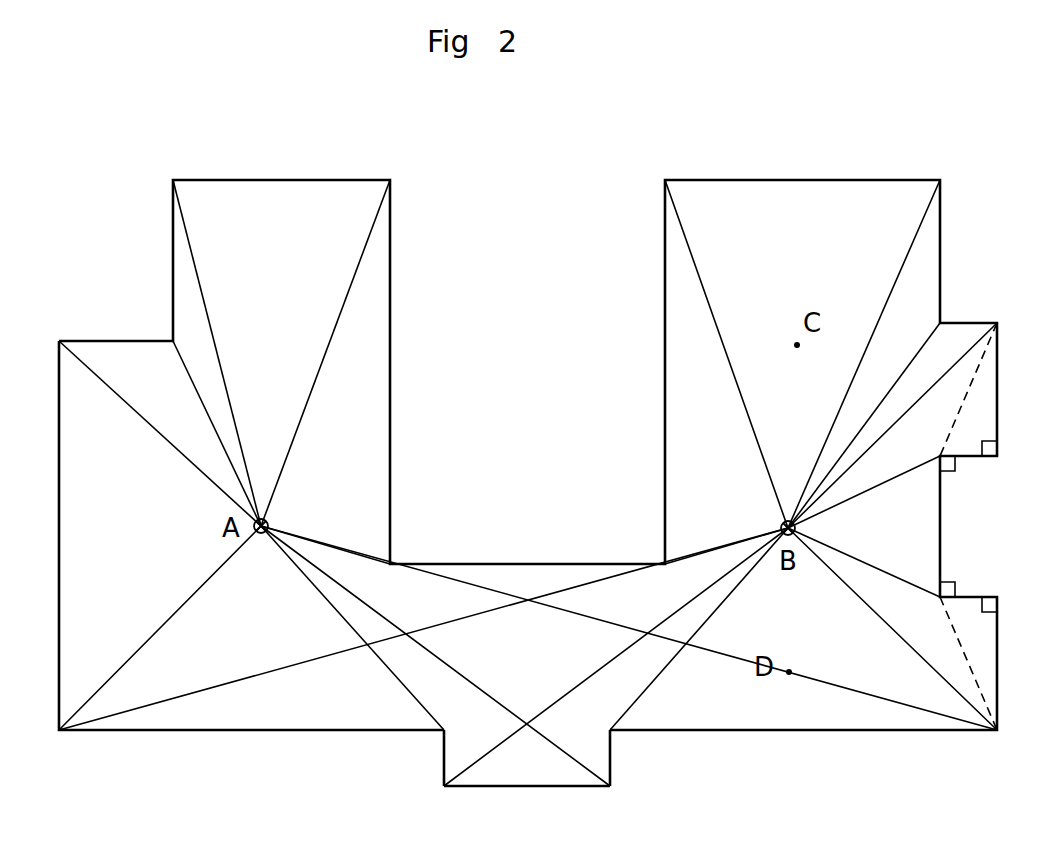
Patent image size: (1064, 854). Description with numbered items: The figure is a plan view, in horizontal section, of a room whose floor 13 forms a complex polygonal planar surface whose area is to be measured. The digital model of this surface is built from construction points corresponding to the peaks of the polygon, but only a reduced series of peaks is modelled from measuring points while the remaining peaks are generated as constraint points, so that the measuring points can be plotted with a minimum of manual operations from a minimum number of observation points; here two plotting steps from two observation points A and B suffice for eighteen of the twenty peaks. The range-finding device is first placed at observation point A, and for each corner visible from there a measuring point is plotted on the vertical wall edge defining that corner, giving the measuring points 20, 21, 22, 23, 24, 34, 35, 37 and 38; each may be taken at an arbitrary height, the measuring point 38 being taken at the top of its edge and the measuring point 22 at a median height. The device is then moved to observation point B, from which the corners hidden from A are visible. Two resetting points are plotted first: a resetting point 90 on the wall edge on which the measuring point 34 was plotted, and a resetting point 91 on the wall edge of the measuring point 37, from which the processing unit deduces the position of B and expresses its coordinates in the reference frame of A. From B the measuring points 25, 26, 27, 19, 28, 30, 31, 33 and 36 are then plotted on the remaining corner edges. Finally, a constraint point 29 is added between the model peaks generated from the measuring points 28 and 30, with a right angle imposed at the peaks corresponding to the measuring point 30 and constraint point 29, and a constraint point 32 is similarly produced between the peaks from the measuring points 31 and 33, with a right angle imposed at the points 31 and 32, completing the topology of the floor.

The floor 13 is at (246, 684).
The measuring point 19 is at (882, 409).
The measuring point 20 is at (144, 414).
The measuring point 21 is at (191, 414).
The measuring point 22 is at (209, 332).
The measuring point 23 is at (341, 332).
The measuring point 24 is at (346, 545).
The measuring point 25 is at (703, 546).
The measuring point 26 is at (713, 334).
The measuring point 27 is at (872, 334).
The measuring point 28 is at (915, 418).
The constraint point 29 is at (1014, 465).
The measuring point 30 is at (883, 492).
The measuring point 31 is at (892, 629).
The constraint point 32 is at (1012, 594).
The measuring point 33 is at (648, 647).
The measuring point 34 is at (637, 758).
The measuring point 35 is at (445, 673).
The measuring point 36 is at (604, 674).
The measuring point 37 is at (417, 758).
The measuring point 38 is at (406, 643).
The resetting point 90 is at (699, 649).
The resetting point 91 is at (352, 648).